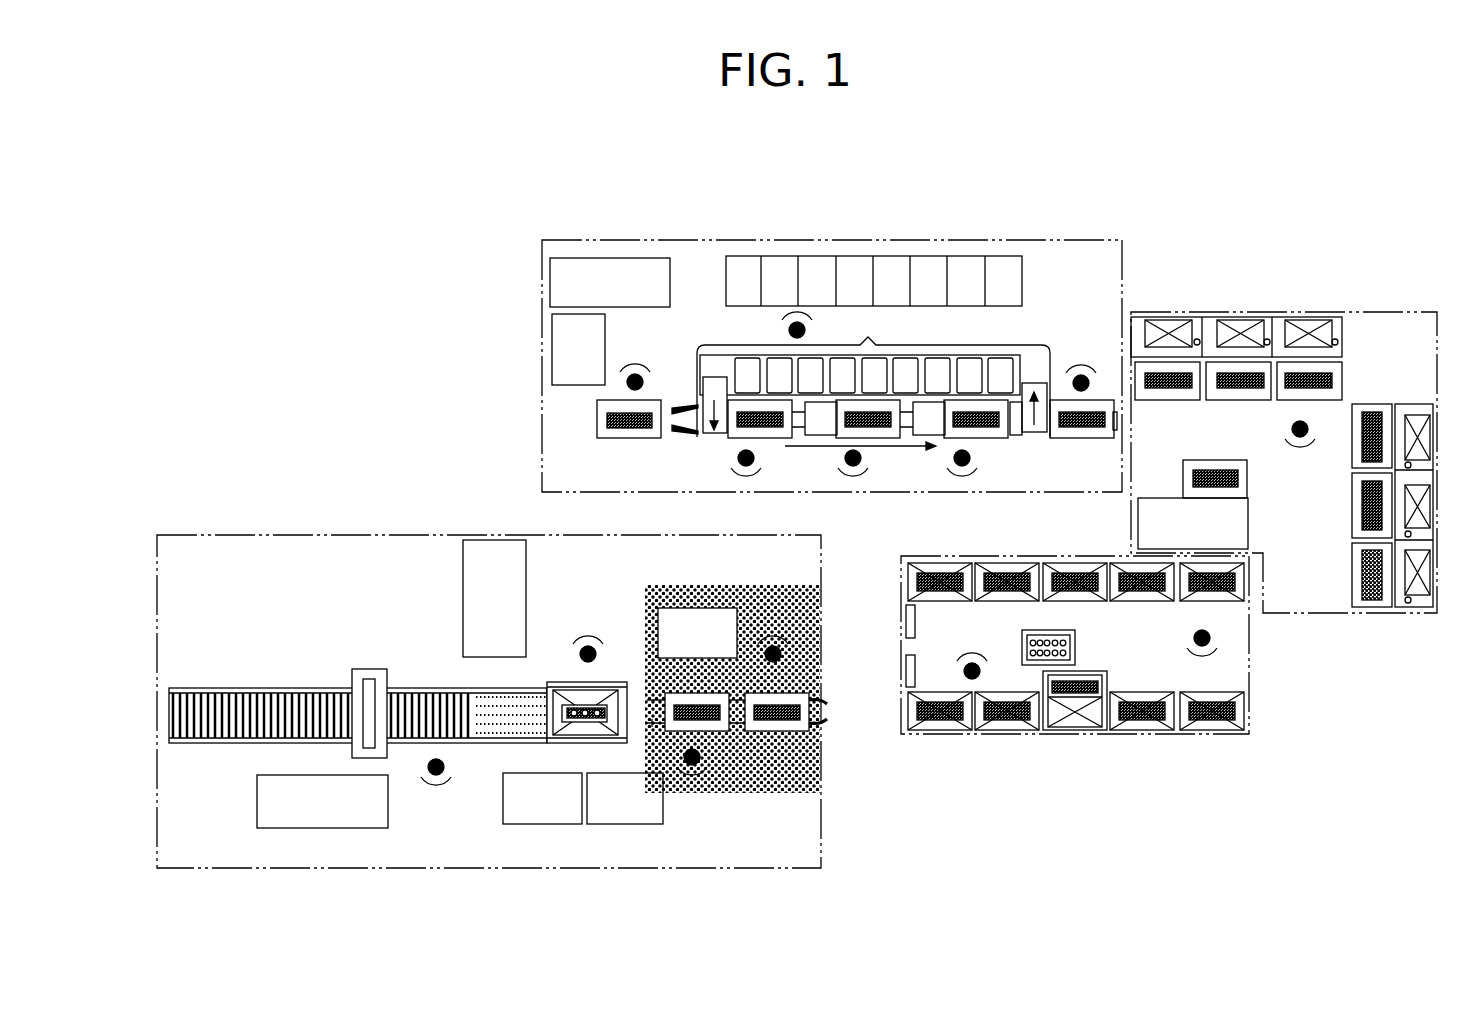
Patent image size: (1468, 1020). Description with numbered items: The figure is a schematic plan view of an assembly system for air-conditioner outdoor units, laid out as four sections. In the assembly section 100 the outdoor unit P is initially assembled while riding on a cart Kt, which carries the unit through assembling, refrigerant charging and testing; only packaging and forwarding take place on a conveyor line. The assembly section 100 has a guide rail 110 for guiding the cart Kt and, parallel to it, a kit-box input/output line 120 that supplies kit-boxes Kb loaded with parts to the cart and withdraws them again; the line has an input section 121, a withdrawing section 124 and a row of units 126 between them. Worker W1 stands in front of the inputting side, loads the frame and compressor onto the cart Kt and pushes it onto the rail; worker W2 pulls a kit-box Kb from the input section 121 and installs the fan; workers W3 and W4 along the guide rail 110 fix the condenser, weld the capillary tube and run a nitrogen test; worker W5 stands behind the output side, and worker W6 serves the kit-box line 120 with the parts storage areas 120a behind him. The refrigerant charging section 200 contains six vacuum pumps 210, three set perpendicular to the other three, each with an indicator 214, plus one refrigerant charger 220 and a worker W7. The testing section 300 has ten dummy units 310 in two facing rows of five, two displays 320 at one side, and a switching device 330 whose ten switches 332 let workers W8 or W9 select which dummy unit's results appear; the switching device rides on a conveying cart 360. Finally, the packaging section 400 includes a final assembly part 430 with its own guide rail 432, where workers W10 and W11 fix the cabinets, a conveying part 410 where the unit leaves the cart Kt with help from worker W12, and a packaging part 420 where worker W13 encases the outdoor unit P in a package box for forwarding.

The assembly section 100 is at (736, 238).
The guide rail 110 is at (797, 440).
The kit-box input/output line 120 is at (881, 317).
The storage areas 120a is at (905, 260).
The input section 121 is at (710, 377).
The withdrawing section 124 is at (1033, 362).
The process chamber 126 is at (987, 357).
The refrigerant charging section 200 is at (1377, 308).
The vacuum pumps 210 is at (1165, 322).
The cassette indicator 214 is at (1198, 340).
The refrigerant charger 220 is at (1150, 525).
The testing section 300 is at (1252, 690).
The dummy units 310 is at (1165, 723).
The displays 320 is at (908, 658).
The switching device 330 is at (1037, 661).
The switches 332 is at (1076, 636).
The conveying cart 360 is at (1024, 665).
The packaging section 400 is at (828, 822).
The conveying part 410 is at (590, 735).
The packaging part 420 is at (425, 698).
The final assembly part 430 is at (752, 790).
The guide rail 432 is at (655, 700).
The cart Kt is at (598, 412).
The kit-box Kb is at (704, 433).
The outdoor unit P is at (608, 422).
The worker W1 is at (628, 372).
The worker W2 is at (749, 478).
The worker W3 is at (856, 478).
The worker W4 is at (963, 478).
The worker W5 is at (1080, 372).
The worker W6 is at (792, 312).
The worker W7 is at (1305, 447).
The worker W8 is at (1212, 636).
The worker W9 is at (965, 680).
The worker W10 is at (782, 637).
The worker W11 is at (692, 775).
The worker W12 is at (576, 640).
The worker W13 is at (445, 787).